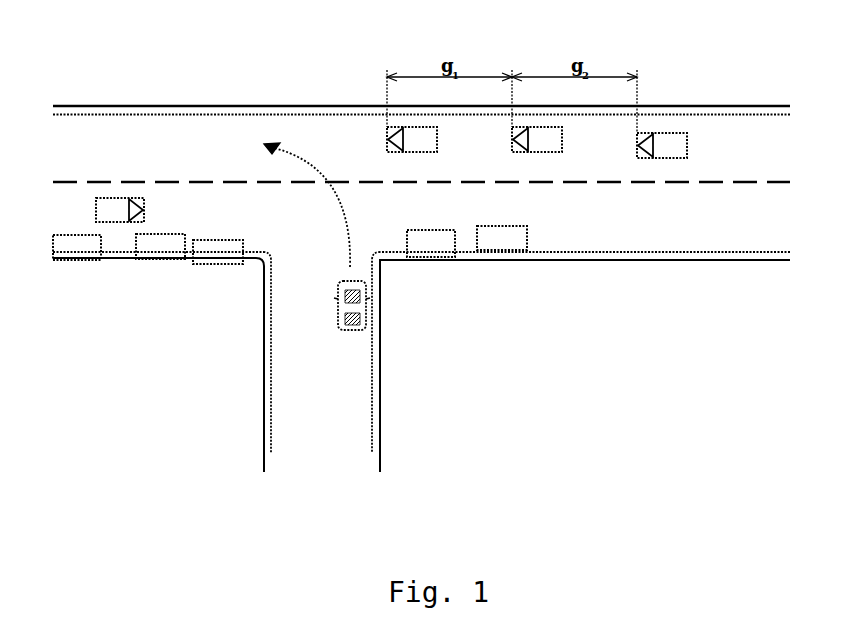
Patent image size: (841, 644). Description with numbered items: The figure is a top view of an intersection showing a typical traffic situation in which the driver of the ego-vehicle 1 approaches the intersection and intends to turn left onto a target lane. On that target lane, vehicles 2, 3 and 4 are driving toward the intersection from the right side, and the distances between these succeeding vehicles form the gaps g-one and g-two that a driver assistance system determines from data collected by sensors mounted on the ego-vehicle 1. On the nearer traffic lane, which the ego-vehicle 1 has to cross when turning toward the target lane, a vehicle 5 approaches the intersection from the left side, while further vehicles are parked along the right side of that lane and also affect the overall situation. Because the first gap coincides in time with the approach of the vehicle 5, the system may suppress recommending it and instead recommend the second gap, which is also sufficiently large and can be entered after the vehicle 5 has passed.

The ego-vehicle 1 is at (365, 311).
The vehicle 2 is at (407, 126).
The vehicle 3 is at (540, 126).
The vehicle 4 is at (662, 133).
The vehicle 5 is at (121, 222).